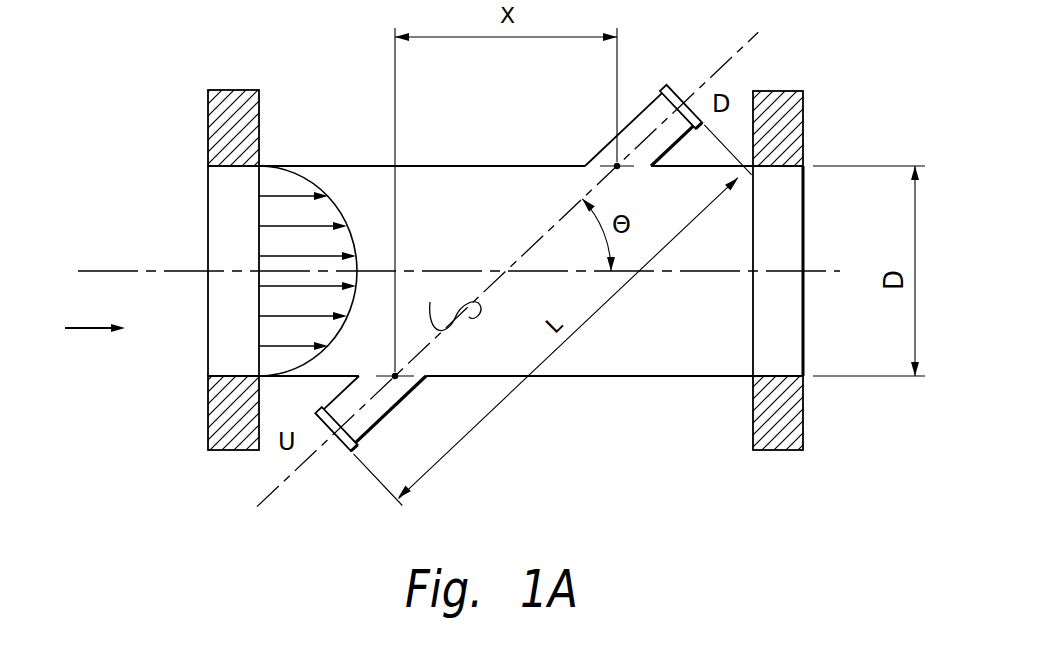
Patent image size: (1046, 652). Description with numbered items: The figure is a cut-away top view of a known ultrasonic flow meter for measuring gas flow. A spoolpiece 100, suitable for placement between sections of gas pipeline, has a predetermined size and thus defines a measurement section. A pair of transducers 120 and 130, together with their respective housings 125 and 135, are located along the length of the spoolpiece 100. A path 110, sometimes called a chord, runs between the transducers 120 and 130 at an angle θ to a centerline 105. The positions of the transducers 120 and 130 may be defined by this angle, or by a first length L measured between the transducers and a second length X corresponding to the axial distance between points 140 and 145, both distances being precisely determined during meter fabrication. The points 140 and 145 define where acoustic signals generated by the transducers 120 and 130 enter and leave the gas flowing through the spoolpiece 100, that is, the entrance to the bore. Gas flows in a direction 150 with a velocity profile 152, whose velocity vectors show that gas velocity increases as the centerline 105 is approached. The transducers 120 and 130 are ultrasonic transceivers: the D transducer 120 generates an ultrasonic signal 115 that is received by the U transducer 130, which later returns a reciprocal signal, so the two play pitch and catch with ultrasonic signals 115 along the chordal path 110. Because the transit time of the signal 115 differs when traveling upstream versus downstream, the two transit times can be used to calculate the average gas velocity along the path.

The spoolpiece 100 is at (803, 166).
The centerline 105 is at (836, 271).
The path 110 is at (563, 222).
The ultrasonic signal 115 is at (445, 301).
The D transducer 120 is at (672, 90).
The transducer housing 125 is at (598, 149).
The U transducer 130 is at (340, 453).
The transducer housing 135 is at (337, 393).
The point 140 is at (620, 170).
The point 145 is at (398, 374).
The flow direction 150 is at (85, 331).
The velocity profile 152 is at (340, 214).